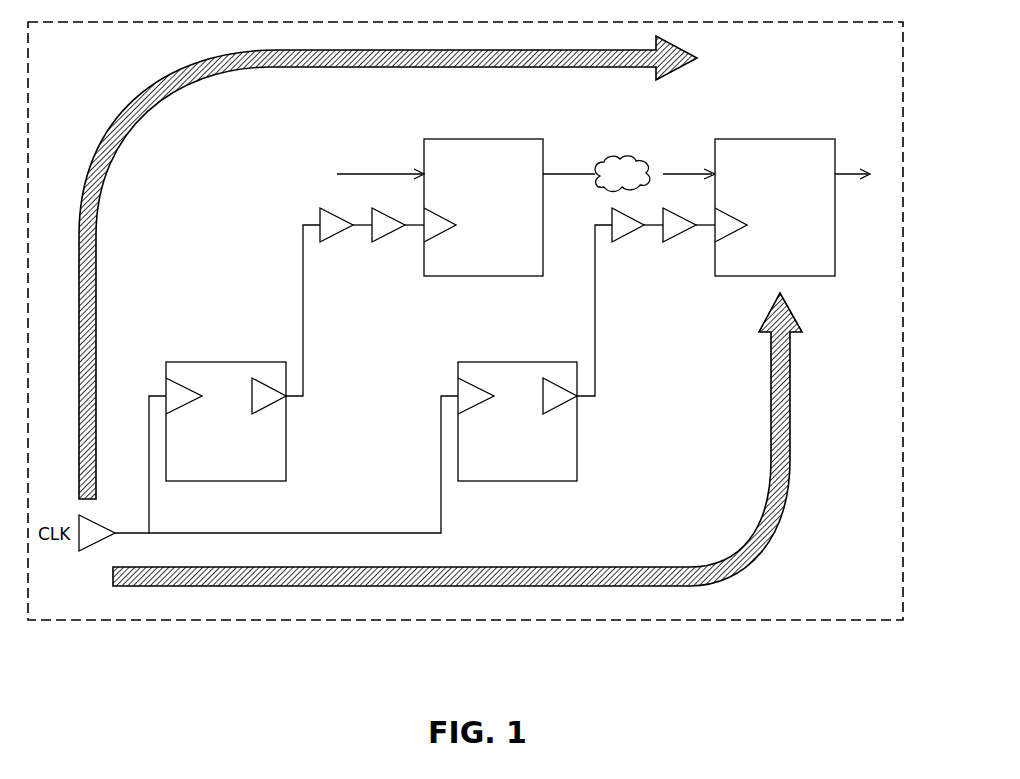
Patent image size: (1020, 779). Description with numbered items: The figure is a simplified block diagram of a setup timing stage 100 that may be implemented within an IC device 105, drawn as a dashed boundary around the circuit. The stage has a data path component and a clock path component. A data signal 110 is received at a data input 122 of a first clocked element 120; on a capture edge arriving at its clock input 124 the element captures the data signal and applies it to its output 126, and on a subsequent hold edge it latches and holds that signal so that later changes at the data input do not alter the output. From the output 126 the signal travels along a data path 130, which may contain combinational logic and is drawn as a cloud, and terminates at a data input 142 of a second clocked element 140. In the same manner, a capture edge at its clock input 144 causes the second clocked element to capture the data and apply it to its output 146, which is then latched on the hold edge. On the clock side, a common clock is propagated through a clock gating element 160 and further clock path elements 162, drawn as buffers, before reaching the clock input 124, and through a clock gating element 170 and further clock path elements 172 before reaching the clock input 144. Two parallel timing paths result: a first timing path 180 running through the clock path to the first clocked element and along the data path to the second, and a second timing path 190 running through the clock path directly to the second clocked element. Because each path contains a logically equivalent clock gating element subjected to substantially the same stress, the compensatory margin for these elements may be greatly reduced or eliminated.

The setup timing stage 100 is at (820, 502).
The IC device 105 is at (148, 620).
The data signal 110 is at (355, 173).
The first clocked element 120 is at (468, 139).
The data input 122 is at (424, 169).
The clock input 124 is at (424, 245).
The output 126 is at (545, 161).
The data path 130 is at (626, 158).
The second clocked element 140 is at (762, 139).
The data input 142 is at (715, 169).
The clock input 144 is at (715, 245).
The output 146 is at (836, 161).
The clock gating element 160 is at (216, 362).
The further clock path elements 162 is at (357, 258).
The clock gating element 170 is at (508, 362).
The further clock path elements 172 is at (648, 258).
The first timing path 180 is at (130, 118).
The second timing path 190 is at (698, 572).